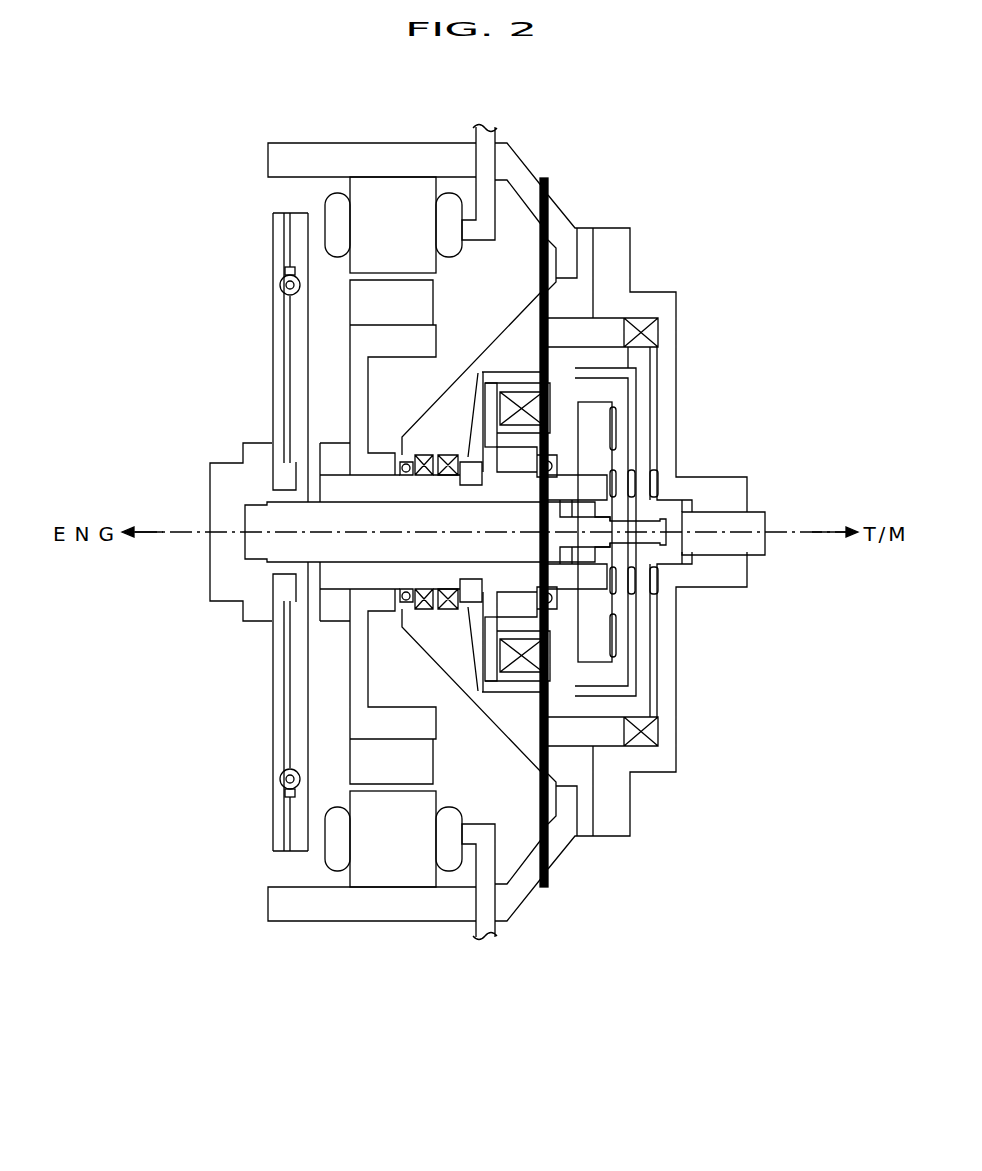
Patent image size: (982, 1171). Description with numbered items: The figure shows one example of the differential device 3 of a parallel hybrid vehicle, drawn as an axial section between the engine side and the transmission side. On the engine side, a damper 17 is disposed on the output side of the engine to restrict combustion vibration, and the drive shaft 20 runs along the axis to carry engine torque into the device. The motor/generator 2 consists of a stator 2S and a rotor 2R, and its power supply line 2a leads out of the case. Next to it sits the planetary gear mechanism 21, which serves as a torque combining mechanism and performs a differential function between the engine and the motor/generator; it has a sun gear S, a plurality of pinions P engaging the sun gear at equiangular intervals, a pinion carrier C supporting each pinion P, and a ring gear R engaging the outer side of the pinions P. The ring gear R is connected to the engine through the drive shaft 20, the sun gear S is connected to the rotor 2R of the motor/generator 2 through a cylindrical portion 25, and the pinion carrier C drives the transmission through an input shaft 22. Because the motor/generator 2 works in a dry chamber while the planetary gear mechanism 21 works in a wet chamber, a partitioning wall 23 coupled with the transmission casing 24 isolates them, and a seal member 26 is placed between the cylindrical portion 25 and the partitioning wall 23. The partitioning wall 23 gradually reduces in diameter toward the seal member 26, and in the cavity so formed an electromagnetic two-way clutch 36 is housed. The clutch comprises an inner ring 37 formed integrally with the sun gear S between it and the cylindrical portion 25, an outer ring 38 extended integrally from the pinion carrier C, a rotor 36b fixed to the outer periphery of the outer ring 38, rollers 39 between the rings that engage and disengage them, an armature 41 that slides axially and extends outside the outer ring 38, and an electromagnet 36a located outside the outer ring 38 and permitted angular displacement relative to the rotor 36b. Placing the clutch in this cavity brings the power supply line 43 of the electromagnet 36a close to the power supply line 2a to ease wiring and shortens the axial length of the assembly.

The motor/generator 2 is at (327, 532).
The stator 2S is at (370, 223).
The rotor 2R is at (368, 300).
The power supply line 2a is at (497, 131).
The differential device 3 is at (388, 962).
The damper 17 is at (263, 355).
The drive shaft 20 is at (280, 513).
The planetary gear mechanism 21 is at (655, 518).
The input shaft 22 is at (728, 548).
The partitioning wall 23 is at (518, 334).
The transmission casing 24 is at (622, 262).
The cylindrical portion 25 is at (372, 485).
The seal member 26 is at (403, 465).
The electromagnetic two-way clutch 36 is at (513, 687).
The electromagnet 36a is at (530, 367).
The rotor 36b is at (525, 388).
The inner ring 37 is at (505, 477).
The outer ring 38 is at (507, 438).
The rollers 39 is at (505, 613).
The armature 41 is at (492, 403).
The power supply line 43 is at (550, 185).
The ring gear R is at (602, 385).
The pinion carrier C is at (577, 415).
The pinions P is at (595, 443).
The sun gear S is at (631, 516).